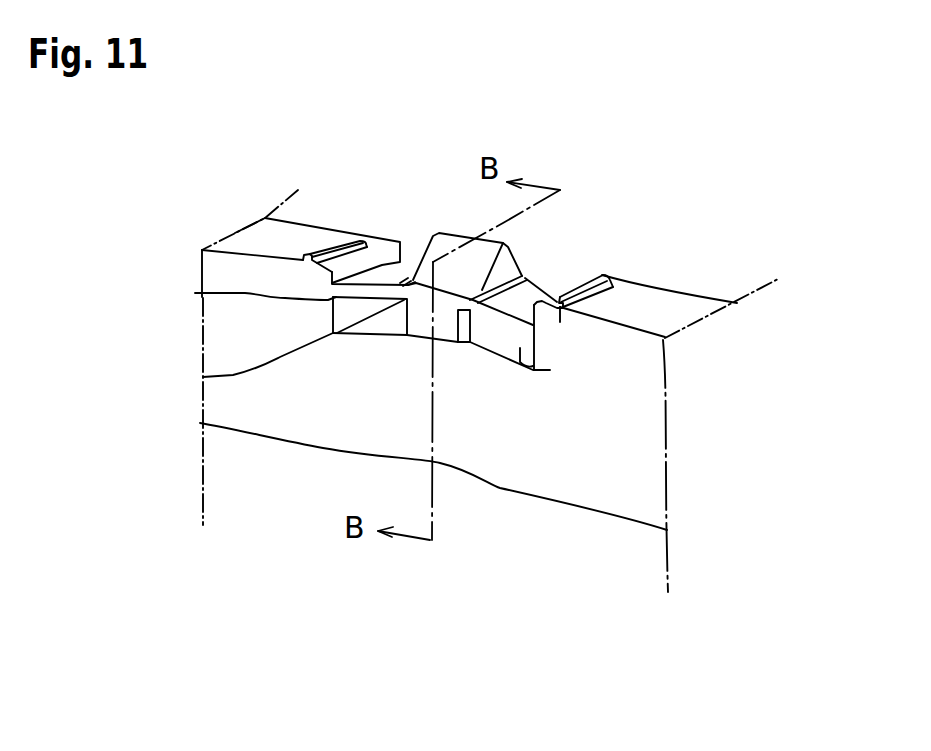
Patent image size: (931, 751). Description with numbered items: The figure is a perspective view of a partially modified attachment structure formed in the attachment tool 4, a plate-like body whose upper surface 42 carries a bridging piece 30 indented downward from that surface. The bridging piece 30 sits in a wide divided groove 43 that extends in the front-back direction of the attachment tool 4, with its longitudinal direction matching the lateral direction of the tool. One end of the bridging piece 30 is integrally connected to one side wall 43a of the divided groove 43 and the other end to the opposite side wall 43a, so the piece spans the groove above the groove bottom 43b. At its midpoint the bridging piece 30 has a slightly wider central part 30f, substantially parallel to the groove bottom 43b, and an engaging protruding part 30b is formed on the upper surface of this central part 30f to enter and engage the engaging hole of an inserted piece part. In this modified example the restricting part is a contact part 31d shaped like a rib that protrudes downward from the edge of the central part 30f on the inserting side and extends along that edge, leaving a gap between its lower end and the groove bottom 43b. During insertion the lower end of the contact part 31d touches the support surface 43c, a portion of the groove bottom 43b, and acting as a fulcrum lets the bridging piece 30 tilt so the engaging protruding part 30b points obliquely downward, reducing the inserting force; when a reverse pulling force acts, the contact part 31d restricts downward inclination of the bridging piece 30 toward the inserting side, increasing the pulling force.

The attachment tool 4 is at (622, 463).
The bridging piece 30 is at (530, 288).
The engaging protruding part 30b is at (433, 261).
The central part 30f is at (522, 275).
The contact part 31d is at (444, 330).
The upper surface 42 is at (675, 303).
The divided groove 43 is at (227, 377).
The side wall 43a is at (347, 304).
The groove bottom 43b is at (380, 343).
The support surface 43c is at (456, 345).